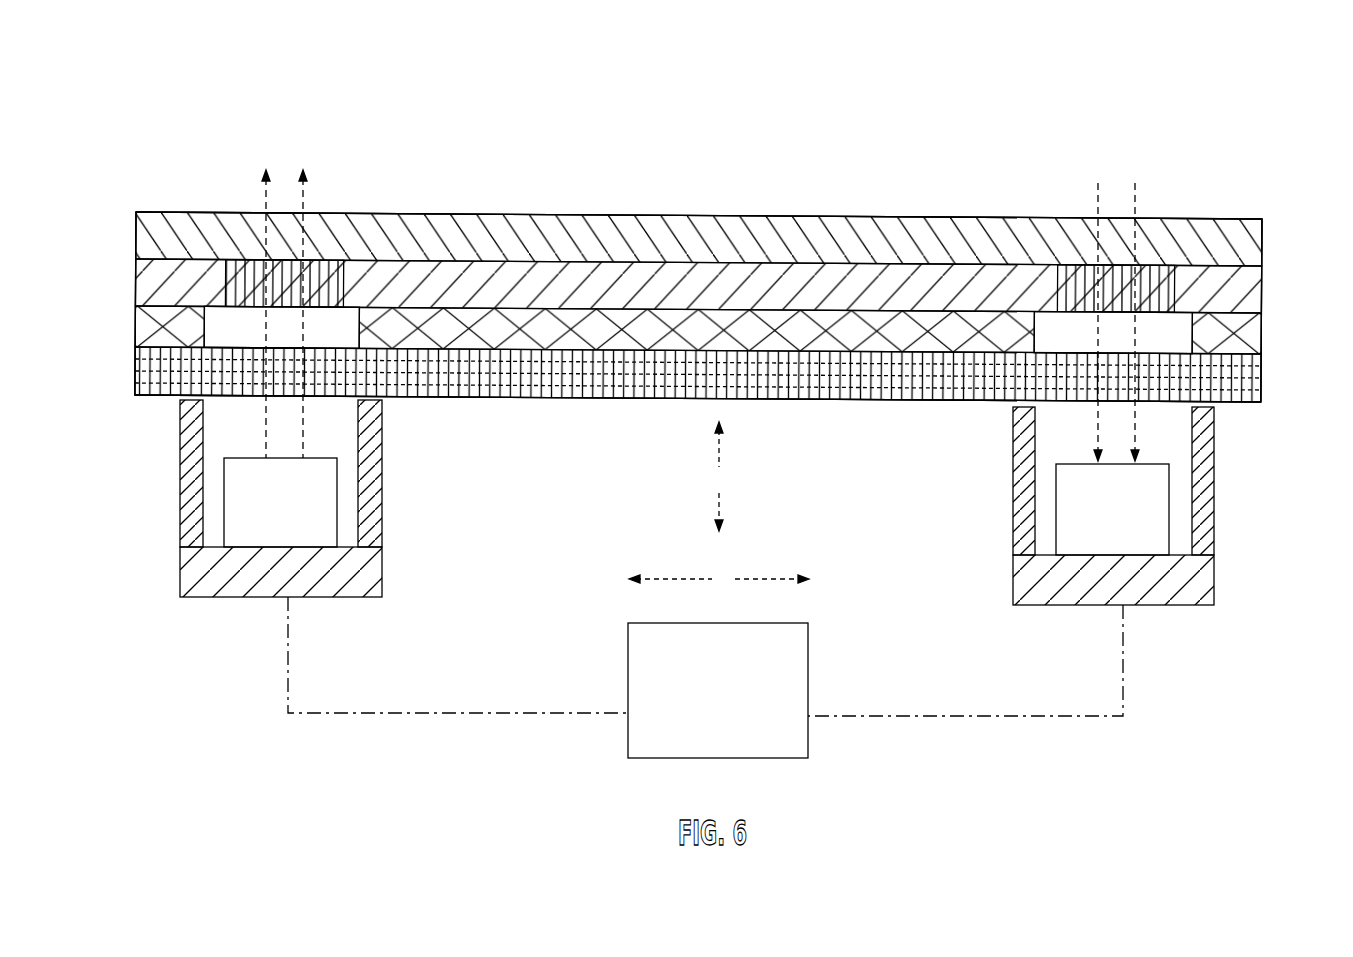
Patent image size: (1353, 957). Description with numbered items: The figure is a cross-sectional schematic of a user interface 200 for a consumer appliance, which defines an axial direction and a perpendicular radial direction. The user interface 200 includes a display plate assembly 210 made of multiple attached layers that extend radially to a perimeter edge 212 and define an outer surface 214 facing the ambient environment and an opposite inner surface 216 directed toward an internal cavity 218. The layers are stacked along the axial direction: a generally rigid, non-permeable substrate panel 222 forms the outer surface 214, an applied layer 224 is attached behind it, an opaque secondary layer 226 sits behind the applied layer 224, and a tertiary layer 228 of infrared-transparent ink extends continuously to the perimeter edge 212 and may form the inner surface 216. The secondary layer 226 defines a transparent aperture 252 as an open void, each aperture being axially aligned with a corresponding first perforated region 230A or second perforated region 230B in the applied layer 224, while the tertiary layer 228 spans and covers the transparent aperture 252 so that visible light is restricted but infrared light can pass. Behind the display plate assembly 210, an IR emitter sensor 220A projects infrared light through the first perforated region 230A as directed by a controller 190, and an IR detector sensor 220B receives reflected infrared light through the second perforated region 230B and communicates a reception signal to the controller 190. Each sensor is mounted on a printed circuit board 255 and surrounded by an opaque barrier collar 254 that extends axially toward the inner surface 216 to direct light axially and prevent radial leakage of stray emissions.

The controller 190 is at (728, 714).
The user interface 200 is at (1145, 107).
The display plate assembly 210 is at (1277, 220).
The perimeter edge 212 is at (702, 278).
The outer surface 214 is at (699, 187).
The inner surface 216 is at (698, 432).
The internal cavity 218 is at (857, 511).
The IR emitter sensor 220A is at (310, 526).
The IR detector sensor 220B is at (1141, 527).
The substrate panel 222 is at (136, 240).
The applied layer 224 is at (136, 293).
The secondary layer 226 is at (136, 337).
The tertiary layer 228 is at (136, 375).
The first perforated region 230A is at (392, 357).
The second perforated region 230B is at (1021, 362).
The transparent aperture 252 is at (698, 389).
The opaque barrier collar 254 is at (180, 517).
The printed circuit board 255 is at (382, 578).